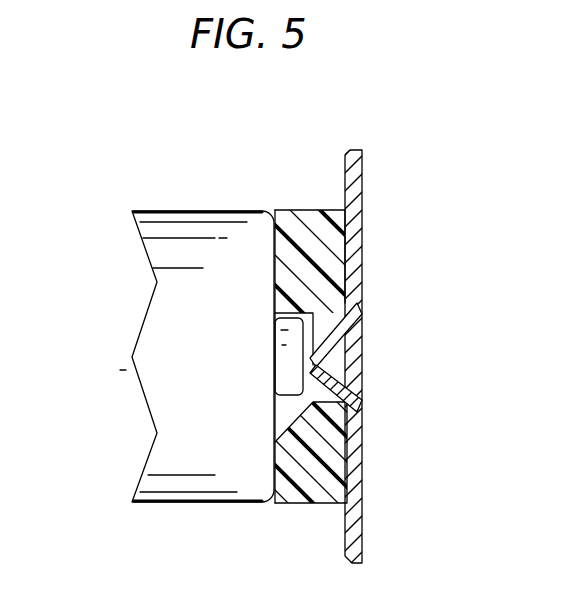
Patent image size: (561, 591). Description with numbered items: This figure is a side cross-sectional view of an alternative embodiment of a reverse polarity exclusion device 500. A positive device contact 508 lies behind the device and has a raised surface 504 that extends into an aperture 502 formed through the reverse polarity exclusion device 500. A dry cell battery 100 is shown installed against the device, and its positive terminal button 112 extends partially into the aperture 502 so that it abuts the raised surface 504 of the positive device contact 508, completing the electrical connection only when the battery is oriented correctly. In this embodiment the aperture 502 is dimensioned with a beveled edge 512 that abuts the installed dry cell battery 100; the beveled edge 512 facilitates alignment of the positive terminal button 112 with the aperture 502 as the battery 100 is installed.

The dry cell battery 100 is at (157, 378).
The positive terminal button 112 is at (282, 360).
The reverse polarity exclusion device 500 is at (274, 355).
The aperture 502 is at (290, 307).
The raised surface 504 is at (328, 357).
The positive device contact 508 is at (364, 258).
The beveled edge 512 is at (284, 418).